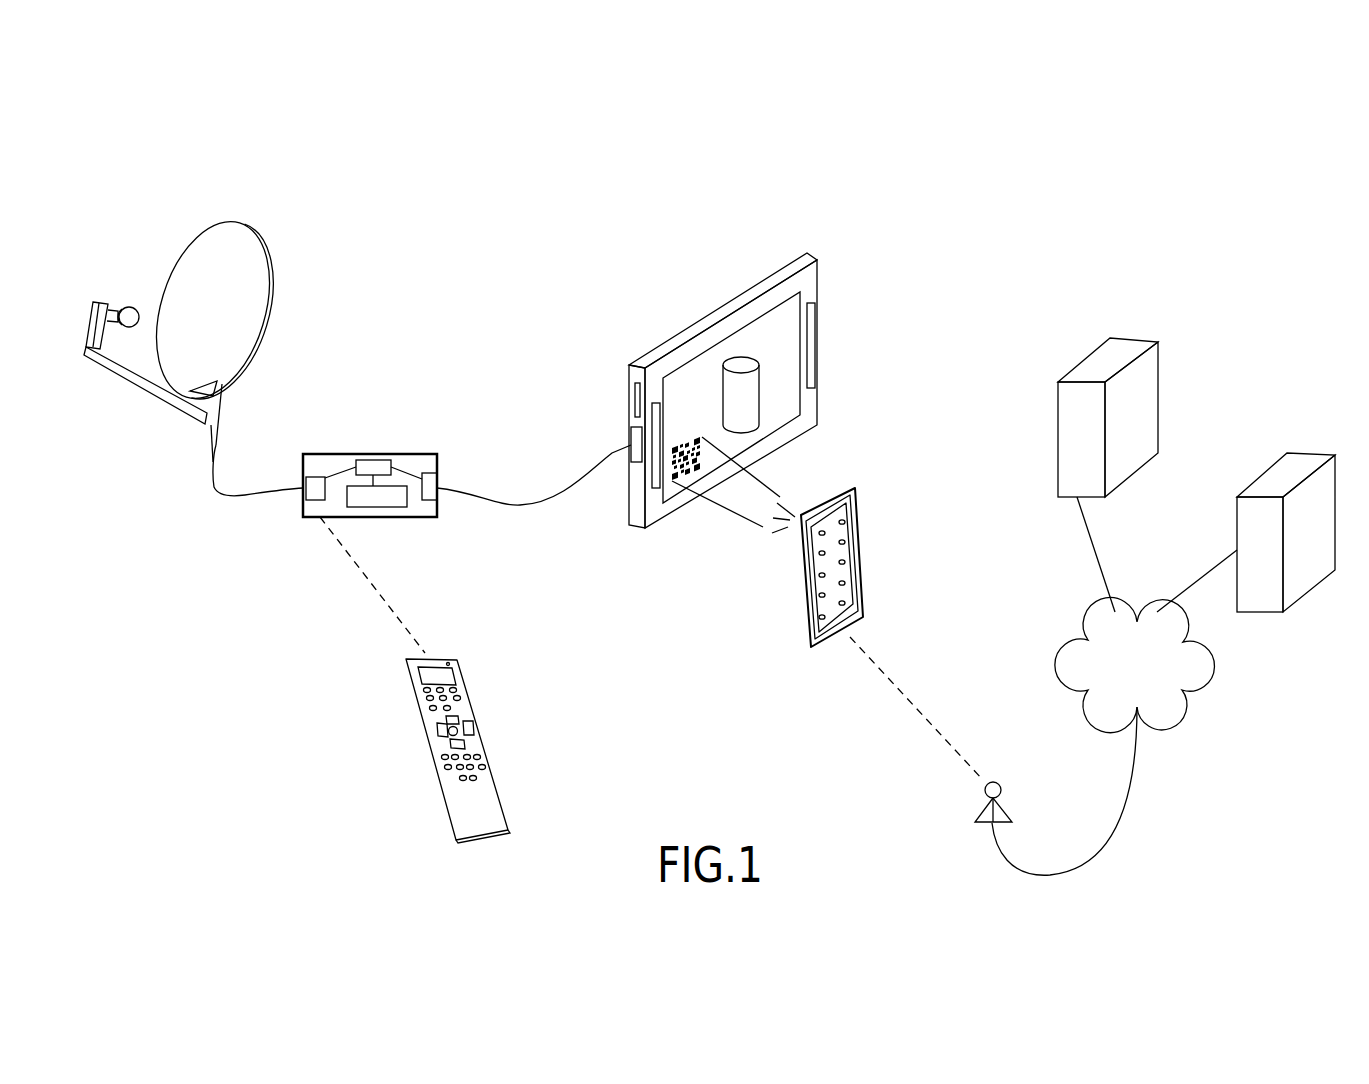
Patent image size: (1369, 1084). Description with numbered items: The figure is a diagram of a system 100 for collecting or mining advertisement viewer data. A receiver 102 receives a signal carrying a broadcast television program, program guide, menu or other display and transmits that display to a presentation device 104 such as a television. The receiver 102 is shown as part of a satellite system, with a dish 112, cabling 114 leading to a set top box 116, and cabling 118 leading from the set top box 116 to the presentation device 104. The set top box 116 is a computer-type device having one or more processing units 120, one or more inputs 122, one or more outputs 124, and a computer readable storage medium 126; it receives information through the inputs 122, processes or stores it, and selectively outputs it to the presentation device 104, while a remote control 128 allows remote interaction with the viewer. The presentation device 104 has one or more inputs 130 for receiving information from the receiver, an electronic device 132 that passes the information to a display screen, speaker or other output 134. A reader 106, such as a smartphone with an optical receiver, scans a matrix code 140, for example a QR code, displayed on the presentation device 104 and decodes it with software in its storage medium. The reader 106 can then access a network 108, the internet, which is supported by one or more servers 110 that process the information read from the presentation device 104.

The system 100 is at (974, 128).
The receiver 102 is at (447, 219).
The presentation device 104 is at (733, 244).
The reader 106 is at (880, 493).
The network 108 is at (1213, 725).
The servers 110 is at (1258, 450).
The dish 112 is at (262, 238).
The cabling 114 is at (218, 468).
The set top box 116 is at (413, 453).
The cabling 118 is at (510, 505).
The processing unit 120 is at (373, 463).
The inputs 122 is at (310, 495).
The outputs 124 is at (427, 478).
The computer readable storage medium 126 is at (378, 503).
The remote control 128 is at (430, 730).
The inputs 130 is at (632, 453).
The electronic device 132 is at (635, 402).
The output 134 is at (800, 348).
The matrix code 140 is at (687, 473).